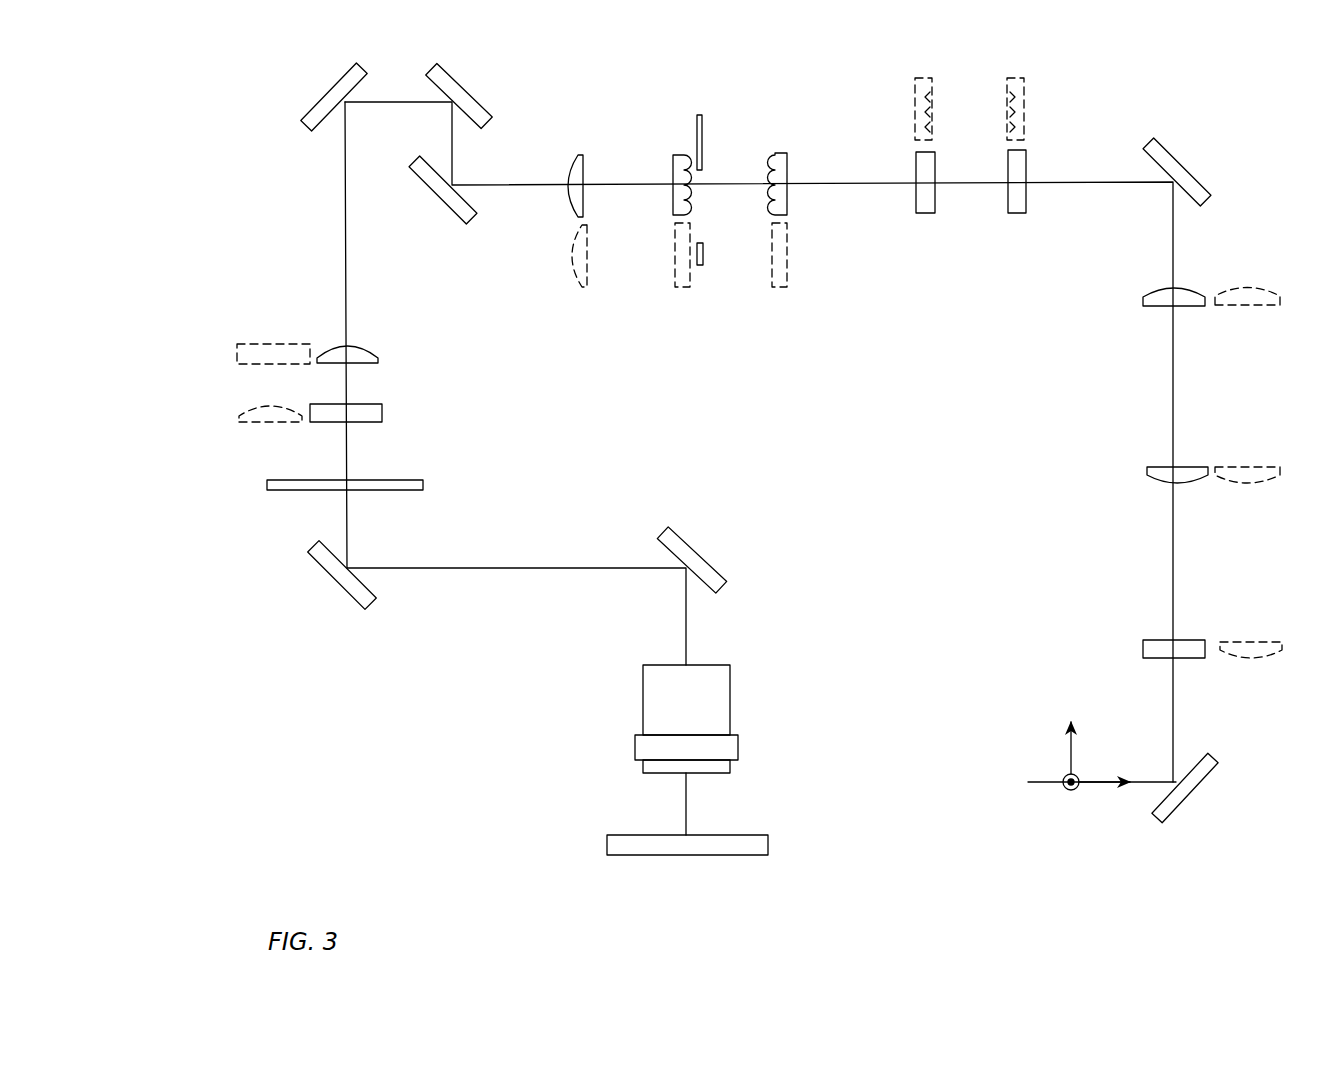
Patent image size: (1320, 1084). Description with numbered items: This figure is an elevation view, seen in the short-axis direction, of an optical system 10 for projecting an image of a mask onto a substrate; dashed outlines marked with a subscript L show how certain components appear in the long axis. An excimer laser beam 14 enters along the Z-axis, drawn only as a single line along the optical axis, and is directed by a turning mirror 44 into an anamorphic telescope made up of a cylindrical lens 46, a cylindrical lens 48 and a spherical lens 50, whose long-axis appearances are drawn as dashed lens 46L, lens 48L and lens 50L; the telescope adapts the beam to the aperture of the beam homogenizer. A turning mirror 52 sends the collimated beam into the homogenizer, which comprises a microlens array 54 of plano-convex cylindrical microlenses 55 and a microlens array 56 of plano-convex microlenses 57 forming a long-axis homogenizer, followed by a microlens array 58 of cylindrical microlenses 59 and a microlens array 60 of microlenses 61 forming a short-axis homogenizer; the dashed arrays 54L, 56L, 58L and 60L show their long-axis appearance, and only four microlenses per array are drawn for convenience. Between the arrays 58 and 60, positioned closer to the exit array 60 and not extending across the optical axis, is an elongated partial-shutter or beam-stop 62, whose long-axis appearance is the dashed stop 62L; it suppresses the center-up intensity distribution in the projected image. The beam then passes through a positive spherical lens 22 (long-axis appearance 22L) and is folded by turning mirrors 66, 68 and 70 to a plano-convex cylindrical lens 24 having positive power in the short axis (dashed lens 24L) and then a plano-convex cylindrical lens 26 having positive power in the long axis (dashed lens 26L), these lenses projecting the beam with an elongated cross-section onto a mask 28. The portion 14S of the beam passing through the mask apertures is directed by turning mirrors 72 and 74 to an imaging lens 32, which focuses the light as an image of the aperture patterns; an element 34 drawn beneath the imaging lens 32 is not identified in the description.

The optical system 10 is at (312, 793).
The beam 14 is at (1043, 782).
The portion of beam passing through mask apertures 14S is at (538, 570).
The spherical lens 22 is at (573, 162).
The long-axis appearance of spherical lens 22L is at (580, 272).
The plano-convex cylindrical lens 24 is at (372, 357).
The long-axis appearance of plano-convex cylindrical lens 24L is at (268, 342).
The plano-convex cylindrical lens 26 is at (380, 412).
The long-axis appearance of plano-convex cylindrical lens 26L is at (250, 407).
The mask 28 is at (418, 478).
The imaging lens 32 is at (733, 697).
The workpiece 34 is at (762, 833).
The turning mirror 44 is at (1160, 797).
The cylindrical lens 46 is at (1153, 640).
The long-axis appearance of cylindrical lens 46L is at (1255, 642).
The cylindrical lens 48 is at (1150, 467).
The long-axis appearance of cylindrical lens 48L is at (1243, 467).
The spherical lens 50 is at (1143, 293).
The long-axis appearance of spherical lens 50L is at (1242, 288).
The turning mirror 52 is at (1147, 155).
The microlens array 54 is at (1013, 220).
The long-axis appearance of microlens array 54L is at (1032, 100).
The plano-convex cylindrical microlenses 55 is at (1012, 101).
The microlens array 56 is at (923, 220).
The long-axis appearance of microlens array 56L is at (908, 113).
The plano-convex microlenses 57 is at (929, 118).
The microlens array 58 is at (790, 157).
The long-axis appearance of microlens array 58L is at (795, 265).
The plano-convex cylindrical microlenses 59 is at (772, 176).
The microlens array 60 is at (668, 162).
The long-axis appearance of microlens array 60L is at (672, 265).
The plano-convex microlenses 61 is at (690, 193).
The beam-stop 62 is at (693, 137).
The long-axis appearance of beam-stop 62L is at (707, 253).
The turning mirror 66 is at (473, 203).
The turning mirror 68 is at (467, 113).
The turning mirror 70 is at (322, 118).
The turning mirror 72 is at (367, 585).
The turning mirror 74 is at (667, 548).